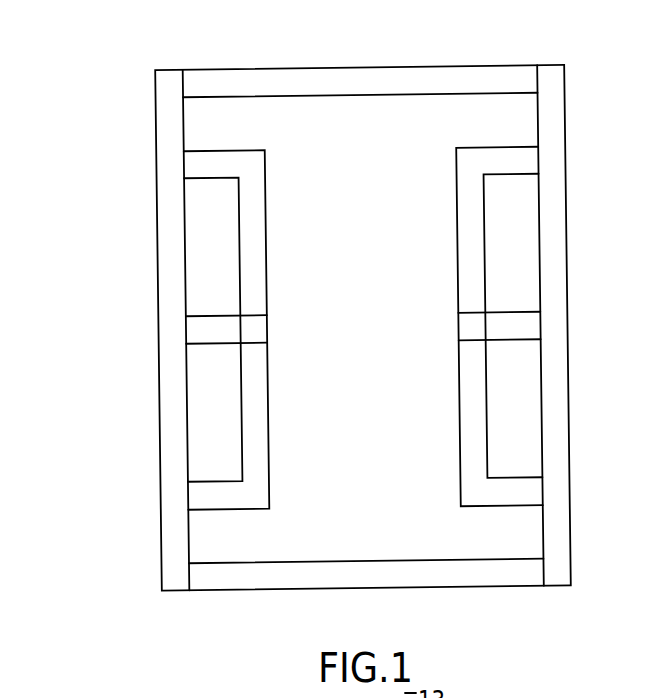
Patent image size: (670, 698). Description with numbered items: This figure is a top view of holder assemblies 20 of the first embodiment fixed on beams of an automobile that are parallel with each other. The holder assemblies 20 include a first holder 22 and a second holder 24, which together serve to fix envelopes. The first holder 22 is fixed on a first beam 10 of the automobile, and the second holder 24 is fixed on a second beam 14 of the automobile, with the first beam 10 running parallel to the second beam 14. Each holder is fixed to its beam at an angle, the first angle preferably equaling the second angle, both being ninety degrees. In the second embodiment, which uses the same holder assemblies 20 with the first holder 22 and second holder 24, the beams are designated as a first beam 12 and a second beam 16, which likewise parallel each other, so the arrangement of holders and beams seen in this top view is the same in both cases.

The first beam 10 is at (169, 247).
The first beam 12 is at (360, 80).
The second beam 14 is at (555, 240).
The second beam 16 is at (365, 578).
The holder assemblies 20 is at (278, 329).
The first holder 22 is at (220, 333).
The second holder 24 is at (480, 378).